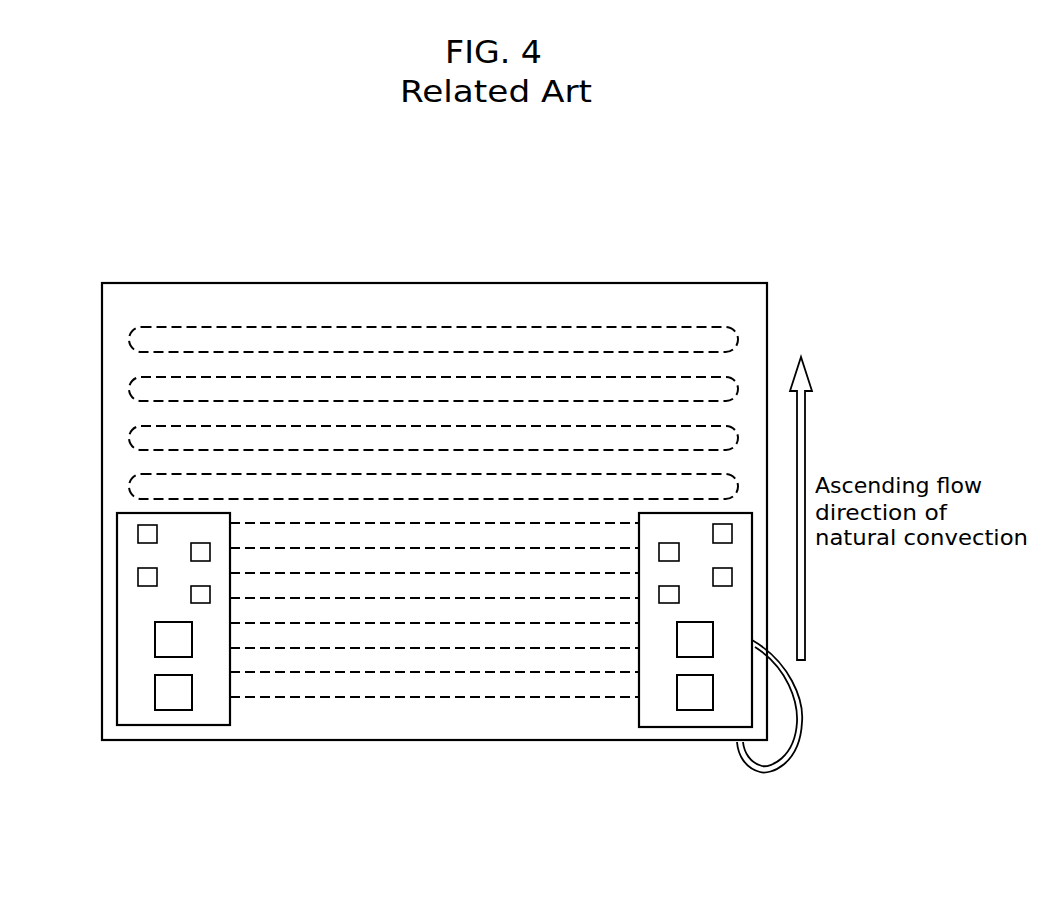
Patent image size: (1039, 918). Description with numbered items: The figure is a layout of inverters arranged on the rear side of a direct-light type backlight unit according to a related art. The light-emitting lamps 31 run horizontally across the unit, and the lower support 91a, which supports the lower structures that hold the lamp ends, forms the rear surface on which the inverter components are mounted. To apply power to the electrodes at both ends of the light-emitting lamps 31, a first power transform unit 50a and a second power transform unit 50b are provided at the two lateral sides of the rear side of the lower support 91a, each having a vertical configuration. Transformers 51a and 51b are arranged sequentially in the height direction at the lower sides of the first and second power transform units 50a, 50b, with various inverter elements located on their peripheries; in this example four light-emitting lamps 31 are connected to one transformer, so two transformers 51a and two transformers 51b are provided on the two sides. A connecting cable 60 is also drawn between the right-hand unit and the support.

The light-emitting lamp 31 is at (377, 327).
The lower support 91a is at (558, 283).
The first power transform unit 50a is at (130, 712).
The second power transform unit 50b is at (653, 712).
The transformer 51a is at (173, 698).
The transformer 51b is at (165, 642).
The connection cable 60 is at (782, 771).